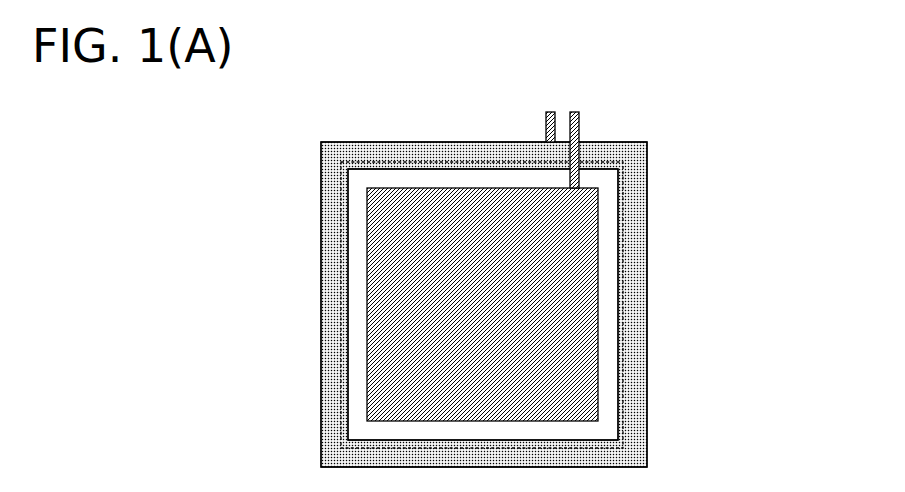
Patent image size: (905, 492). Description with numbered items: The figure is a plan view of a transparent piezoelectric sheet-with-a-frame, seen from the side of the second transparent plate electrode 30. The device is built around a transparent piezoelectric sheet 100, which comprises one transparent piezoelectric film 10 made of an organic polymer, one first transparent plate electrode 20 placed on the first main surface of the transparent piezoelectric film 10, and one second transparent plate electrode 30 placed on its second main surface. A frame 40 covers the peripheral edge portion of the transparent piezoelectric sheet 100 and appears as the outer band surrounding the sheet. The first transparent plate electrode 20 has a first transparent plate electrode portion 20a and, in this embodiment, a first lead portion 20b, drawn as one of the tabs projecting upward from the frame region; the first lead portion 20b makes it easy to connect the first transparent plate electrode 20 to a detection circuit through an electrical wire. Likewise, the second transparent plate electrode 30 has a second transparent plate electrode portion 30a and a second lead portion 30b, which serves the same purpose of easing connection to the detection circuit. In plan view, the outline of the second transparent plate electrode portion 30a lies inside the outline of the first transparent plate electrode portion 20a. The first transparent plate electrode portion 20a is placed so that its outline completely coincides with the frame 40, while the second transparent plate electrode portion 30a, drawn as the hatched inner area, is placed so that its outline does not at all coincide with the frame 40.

The transparent piezoelectric sheet 100 is at (590, 274).
The transparent piezoelectric film 10 is at (603, 260).
The first transparent plate electrode 20 is at (659, 135).
The first transparent plate electrode portion 20a is at (590, 142).
The first lead portion 20b is at (555, 113).
The second transparent plate electrode 30 is at (556, 295).
The second transparent plate electrode portion 30a is at (616, 178).
The second lead portion 30b is at (573, 185).
The frame 40 is at (640, 450).